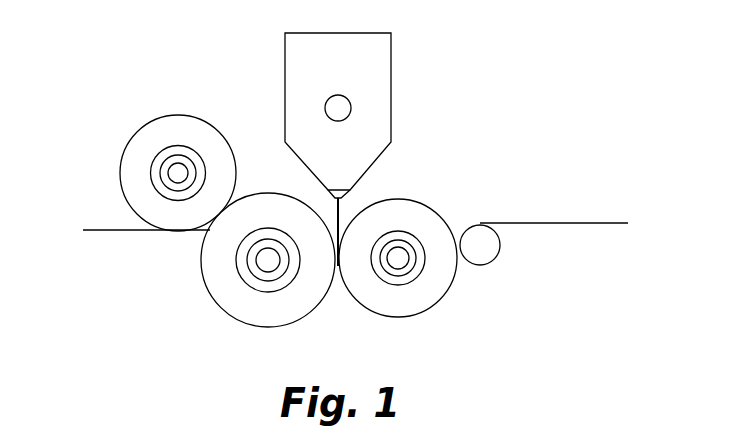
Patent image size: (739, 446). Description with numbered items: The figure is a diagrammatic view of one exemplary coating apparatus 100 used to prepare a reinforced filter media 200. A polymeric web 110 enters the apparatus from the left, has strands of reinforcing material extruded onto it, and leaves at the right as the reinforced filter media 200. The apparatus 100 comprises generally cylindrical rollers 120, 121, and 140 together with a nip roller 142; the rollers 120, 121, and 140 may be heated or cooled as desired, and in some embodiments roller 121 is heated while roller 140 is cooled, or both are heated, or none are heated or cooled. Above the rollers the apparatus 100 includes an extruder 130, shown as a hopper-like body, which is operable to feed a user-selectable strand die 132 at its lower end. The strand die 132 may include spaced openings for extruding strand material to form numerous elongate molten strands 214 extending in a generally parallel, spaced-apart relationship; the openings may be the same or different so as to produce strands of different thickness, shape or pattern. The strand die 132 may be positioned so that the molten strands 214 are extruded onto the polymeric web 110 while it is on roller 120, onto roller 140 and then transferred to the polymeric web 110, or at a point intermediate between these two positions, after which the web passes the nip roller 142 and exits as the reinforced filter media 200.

The coating apparatus 100 is at (243, 66).
The polymeric web 110 is at (96, 218).
The roller 120 is at (258, 284).
The roller 121 is at (167, 150).
The extruder 130 is at (380, 73).
The strand die 132 is at (338, 188).
The roller 140 is at (388, 307).
The nip roller 142 is at (482, 253).
The reinforced filter media 200 is at (537, 210).
The molten strands 214 is at (340, 213).